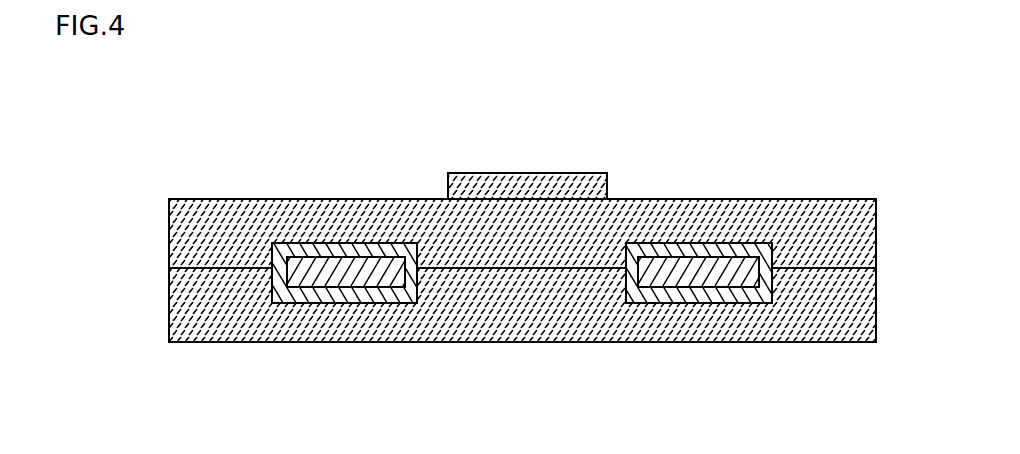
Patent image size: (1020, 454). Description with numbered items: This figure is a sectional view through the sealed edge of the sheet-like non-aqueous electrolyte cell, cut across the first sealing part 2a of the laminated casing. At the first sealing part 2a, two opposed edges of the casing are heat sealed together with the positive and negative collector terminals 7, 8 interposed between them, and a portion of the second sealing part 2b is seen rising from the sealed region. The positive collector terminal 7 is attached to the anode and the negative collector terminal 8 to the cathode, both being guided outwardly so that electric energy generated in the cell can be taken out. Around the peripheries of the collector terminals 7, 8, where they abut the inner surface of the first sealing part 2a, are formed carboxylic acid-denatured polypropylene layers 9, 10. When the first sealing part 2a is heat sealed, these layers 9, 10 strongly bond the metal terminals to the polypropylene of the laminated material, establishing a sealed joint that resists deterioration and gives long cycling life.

The first sealing part 2a is at (530, 308).
The second sealing part 2b is at (503, 183).
The positive collector terminal 7 is at (350, 272).
The negative collector terminal 8 is at (700, 275).
The carboxylic acid-denatured polypropylene layer 9 is at (303, 248).
The carboxylic acid-denatured polypropylene layer 10 is at (752, 273).